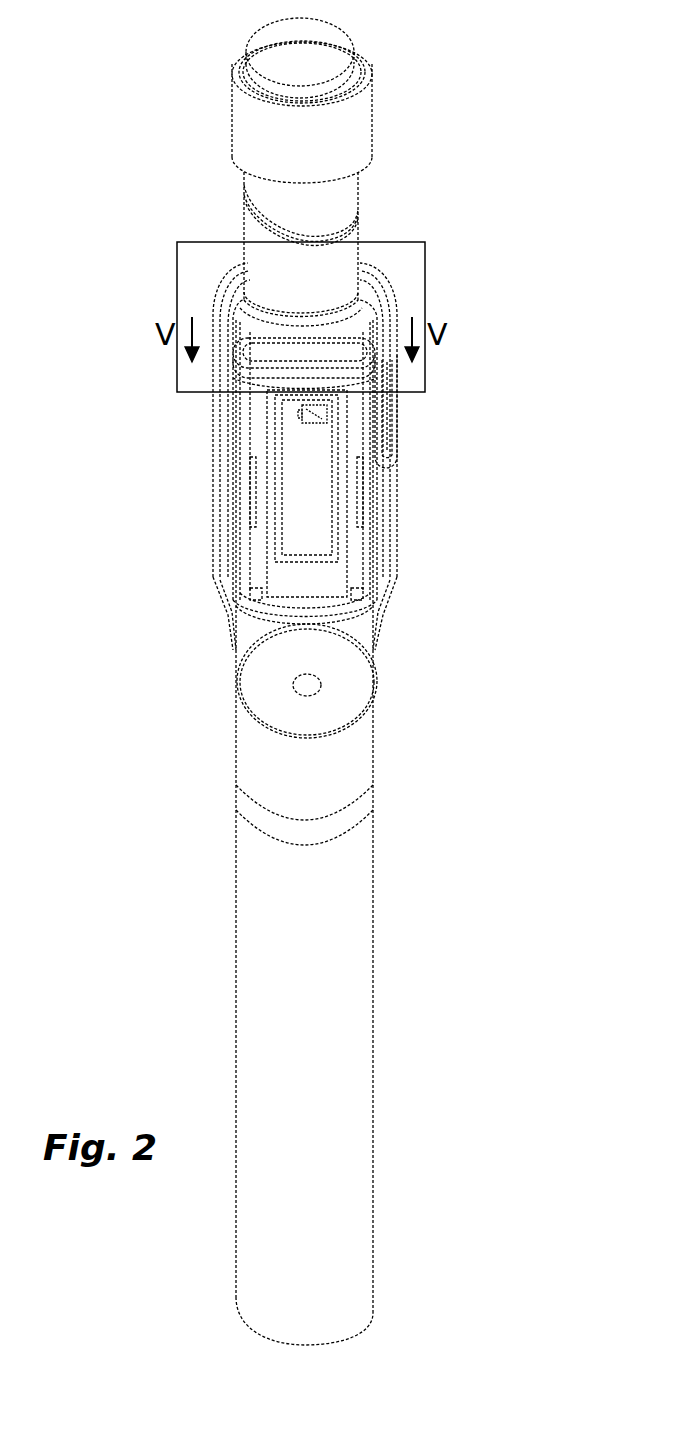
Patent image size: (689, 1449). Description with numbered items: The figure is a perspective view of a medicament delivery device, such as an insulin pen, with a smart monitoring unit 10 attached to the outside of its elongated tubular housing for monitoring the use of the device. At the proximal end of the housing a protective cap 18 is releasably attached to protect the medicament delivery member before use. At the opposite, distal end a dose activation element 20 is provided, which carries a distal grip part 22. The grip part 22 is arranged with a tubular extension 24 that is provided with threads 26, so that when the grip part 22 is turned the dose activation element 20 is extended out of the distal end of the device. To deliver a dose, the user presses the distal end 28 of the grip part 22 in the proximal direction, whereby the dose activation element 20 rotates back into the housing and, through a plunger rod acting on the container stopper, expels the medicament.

The monitoring unit 10 is at (197, 503).
The protective cap 18 is at (324, 1046).
The dose activation element 20 is at (474, 101).
The grip part 22 is at (262, 150).
The tubular extension 24 is at (345, 193).
The threads 26 is at (258, 214).
The distal end 28 is at (298, 33).